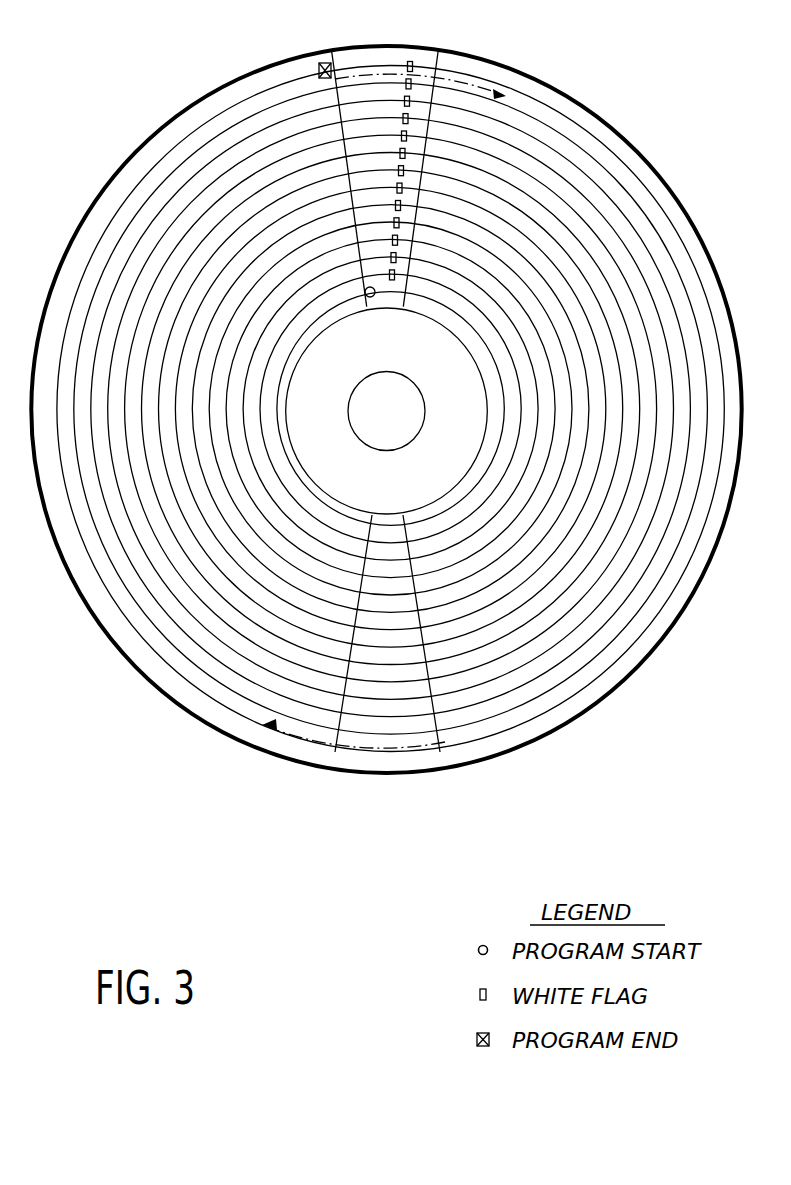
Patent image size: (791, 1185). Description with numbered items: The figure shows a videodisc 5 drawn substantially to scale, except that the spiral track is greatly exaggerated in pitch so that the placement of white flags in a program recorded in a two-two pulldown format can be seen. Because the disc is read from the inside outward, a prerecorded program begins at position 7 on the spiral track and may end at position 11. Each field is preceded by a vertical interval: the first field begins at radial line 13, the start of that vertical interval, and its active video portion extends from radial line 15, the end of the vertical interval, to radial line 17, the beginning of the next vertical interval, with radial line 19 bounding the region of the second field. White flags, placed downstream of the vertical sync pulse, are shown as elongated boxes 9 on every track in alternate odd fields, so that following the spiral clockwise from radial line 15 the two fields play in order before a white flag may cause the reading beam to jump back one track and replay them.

The disc record 5 is at (653, 167).
The program start position 7 is at (371, 297).
The elongated boxes 9 is at (398, 240).
The program end position 11 is at (322, 78).
The radial line 13 is at (320, 55).
The radial line 15 is at (448, 66).
The radial line 17 is at (442, 750).
The field 2 end 19 is at (338, 728).